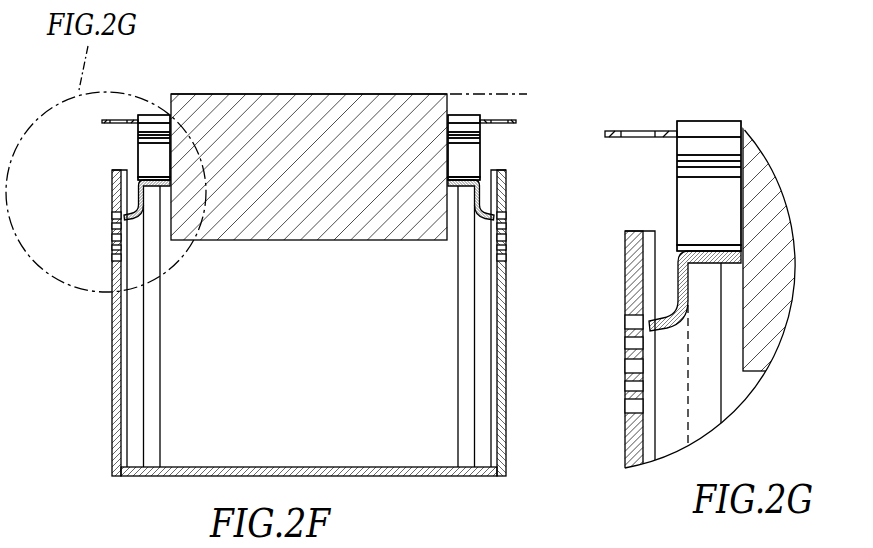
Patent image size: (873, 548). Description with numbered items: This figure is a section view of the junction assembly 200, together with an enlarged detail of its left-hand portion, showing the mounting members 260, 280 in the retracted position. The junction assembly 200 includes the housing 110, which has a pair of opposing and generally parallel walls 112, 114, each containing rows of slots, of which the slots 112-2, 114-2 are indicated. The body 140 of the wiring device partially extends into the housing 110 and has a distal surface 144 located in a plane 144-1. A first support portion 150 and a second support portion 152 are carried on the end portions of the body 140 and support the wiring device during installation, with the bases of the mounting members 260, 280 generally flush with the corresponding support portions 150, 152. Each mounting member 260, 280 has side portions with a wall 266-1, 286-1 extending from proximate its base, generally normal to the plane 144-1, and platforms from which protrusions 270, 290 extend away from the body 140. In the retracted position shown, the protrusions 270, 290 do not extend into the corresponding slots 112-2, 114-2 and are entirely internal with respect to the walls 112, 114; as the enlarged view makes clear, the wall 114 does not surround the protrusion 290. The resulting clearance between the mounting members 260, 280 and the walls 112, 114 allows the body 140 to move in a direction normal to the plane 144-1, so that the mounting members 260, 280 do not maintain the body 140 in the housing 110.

In FIG. 2F, the housing 110 is at (109, 384).
In FIG. 2F, the wall 112 is at (505, 190).
In FIG. 2F, the slot 112-2 is at (503, 212).
In FIG. 2F, the wall 114 is at (113, 194).
In FIG. 2G, the wall 114 is at (628, 262).
In FIG. 2F, the slot 114-2 is at (122, 214).
In FIG. 2G, the slot 114-2 is at (631, 318).
In FIG. 2F, the body 140 is at (318, 93).
In FIG. 2G, the body 140 is at (808, 225).
In FIG. 2F, the distal surface 144 is at (270, 93).
In FIG. 2F, the plane 144-1 is at (471, 93).
In FIG. 2F, the first support portion 150 is at (520, 117).
In FIG. 2F, the second support portion 152 is at (107, 119).
In FIG. 2G, the second support portion 152 is at (637, 129).
In FIG. 2F, the junction assembly 200 is at (52, 350).
In FIG. 2G, the junction assembly 200 is at (797, 428).
In FIG. 2F, the mounting member 260 is at (520, 164).
In FIG. 2F, the wall 266-1 is at (470, 154).
In FIG. 2F, the protrusion 270 is at (475, 212).
In FIG. 2F, the mounting member 280 is at (106, 158).
In FIG. 2G, the mounting member 280 is at (674, 165).
In FIG. 2F, the wall 286-1 is at (147, 150).
In FIG. 2G, the wall 286-1 is at (689, 218).
In FIG. 2F, the protrusion 290 is at (143, 210).
In FIG. 2G, the protrusion 290 is at (664, 315).